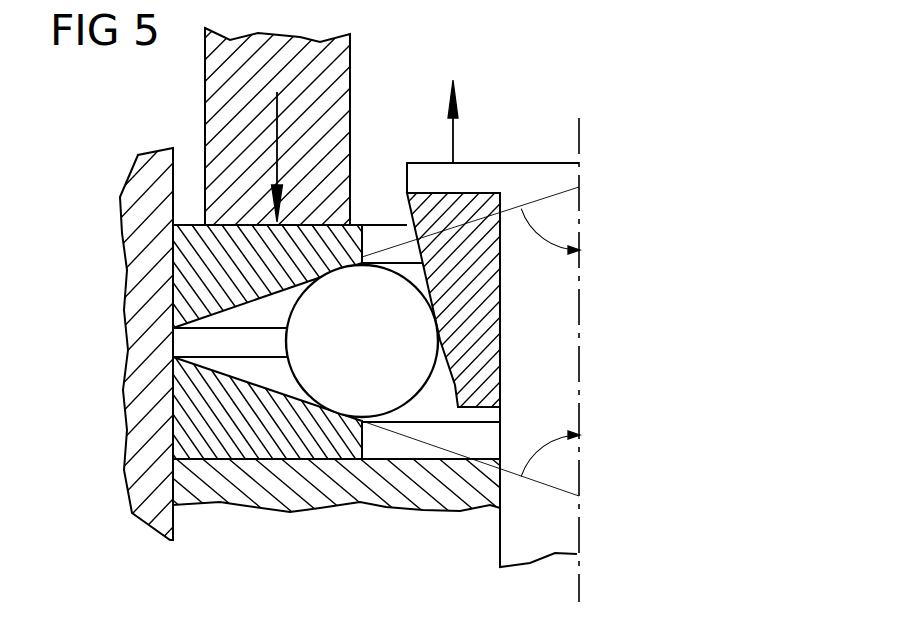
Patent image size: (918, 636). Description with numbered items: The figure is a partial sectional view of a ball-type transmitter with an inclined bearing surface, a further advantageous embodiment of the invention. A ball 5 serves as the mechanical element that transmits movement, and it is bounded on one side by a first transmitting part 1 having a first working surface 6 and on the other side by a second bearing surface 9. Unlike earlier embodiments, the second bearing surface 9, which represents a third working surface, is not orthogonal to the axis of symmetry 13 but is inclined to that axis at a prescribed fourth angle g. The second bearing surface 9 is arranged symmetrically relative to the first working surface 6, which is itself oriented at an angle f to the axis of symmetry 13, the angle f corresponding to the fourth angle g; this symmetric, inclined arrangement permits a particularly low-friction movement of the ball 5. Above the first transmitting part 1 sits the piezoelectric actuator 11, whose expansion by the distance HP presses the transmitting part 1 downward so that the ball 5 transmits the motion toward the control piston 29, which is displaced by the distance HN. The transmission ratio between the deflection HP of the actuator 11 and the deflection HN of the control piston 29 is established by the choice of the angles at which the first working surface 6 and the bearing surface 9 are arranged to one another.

The first transmitting part 1 is at (190, 297).
The piezoelectric actuator 11 is at (227, 94).
The first working surface 6 is at (250, 298).
The second bearing surface 9 is at (242, 382).
The ball 5 is at (334, 390).
The axis of symmetry 13 is at (578, 292).
The control piston 29 is at (547, 358).
The deflection of the actuator HP is at (281, 126).
The deflection of the control piston HN is at (454, 105).
The angle f is at (471, 222).
The fourth angle g is at (471, 458).